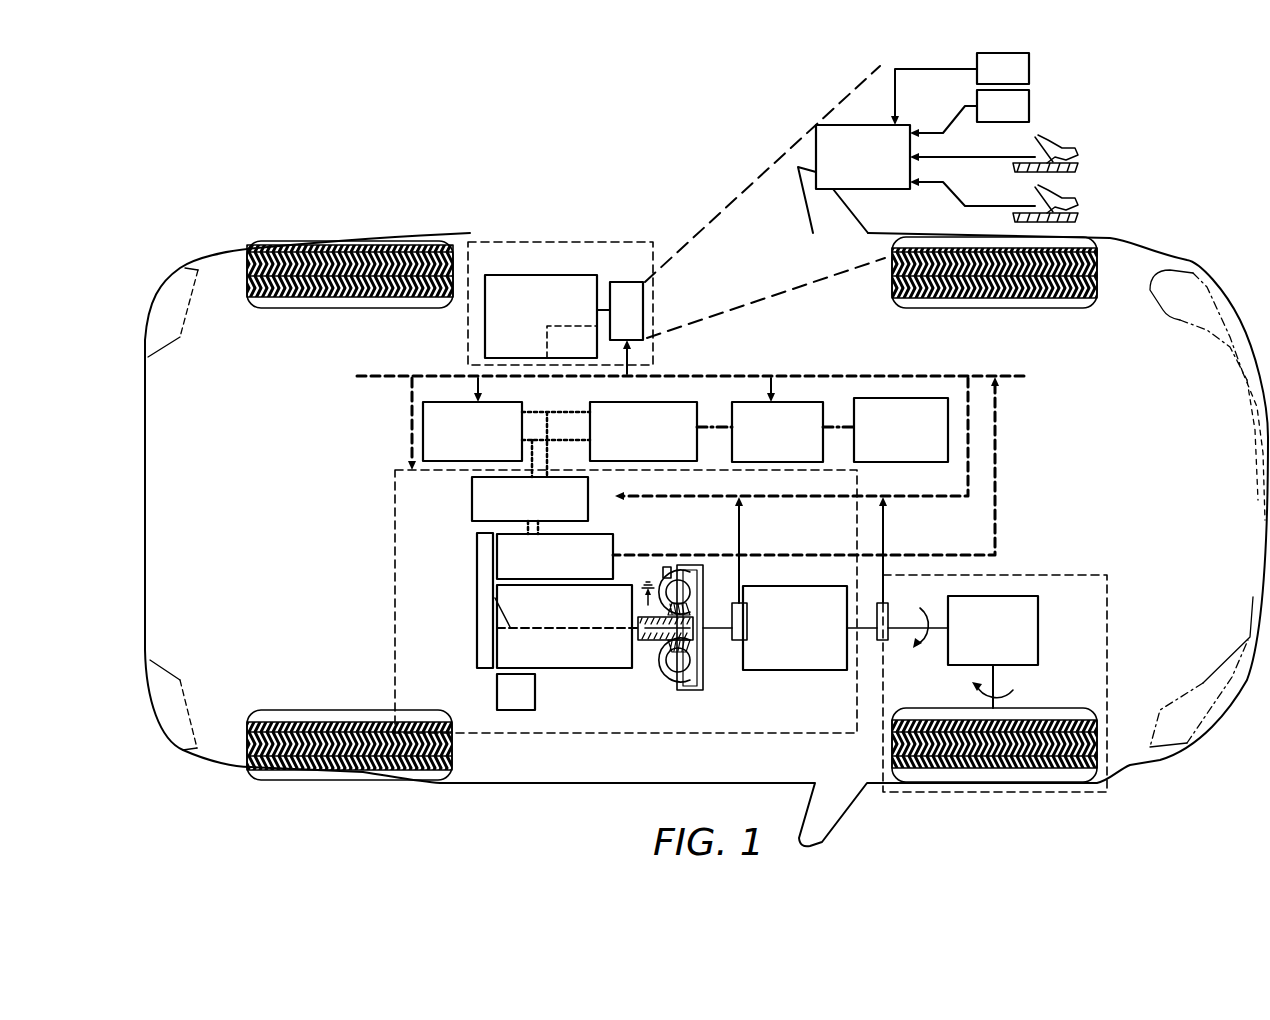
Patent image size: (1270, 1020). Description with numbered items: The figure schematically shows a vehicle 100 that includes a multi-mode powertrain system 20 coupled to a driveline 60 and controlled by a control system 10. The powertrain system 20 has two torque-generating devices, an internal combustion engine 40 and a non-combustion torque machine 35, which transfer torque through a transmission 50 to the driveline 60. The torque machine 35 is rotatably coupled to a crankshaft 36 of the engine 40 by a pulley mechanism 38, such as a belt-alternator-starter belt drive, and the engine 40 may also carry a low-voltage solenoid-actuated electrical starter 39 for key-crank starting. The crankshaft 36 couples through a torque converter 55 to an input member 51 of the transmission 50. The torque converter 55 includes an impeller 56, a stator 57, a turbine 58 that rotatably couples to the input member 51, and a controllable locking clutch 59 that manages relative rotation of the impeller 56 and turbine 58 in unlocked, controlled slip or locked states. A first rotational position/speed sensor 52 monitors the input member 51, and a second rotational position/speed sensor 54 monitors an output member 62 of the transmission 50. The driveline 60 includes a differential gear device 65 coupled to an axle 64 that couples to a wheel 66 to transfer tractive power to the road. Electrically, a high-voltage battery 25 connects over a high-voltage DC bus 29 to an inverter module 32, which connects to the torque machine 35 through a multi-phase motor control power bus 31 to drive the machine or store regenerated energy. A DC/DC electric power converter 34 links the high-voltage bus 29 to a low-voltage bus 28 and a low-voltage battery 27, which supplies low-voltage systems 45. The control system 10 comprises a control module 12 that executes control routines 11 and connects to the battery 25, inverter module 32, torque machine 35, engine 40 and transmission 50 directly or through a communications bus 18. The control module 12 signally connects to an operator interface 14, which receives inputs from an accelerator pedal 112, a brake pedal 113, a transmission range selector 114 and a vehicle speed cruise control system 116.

The vehicle 100 is at (1082, 351).
The control system 10 is at (498, 272).
The control routines 11 is at (562, 354).
The control module 12 is at (530, 302).
The operator interface 14 is at (852, 152).
The communications bus 18 is at (441, 365).
The multi-mode powertrain system 20 is at (866, 540).
The high-voltage battery 25 is at (461, 428).
The low-voltage battery 27 is at (767, 428).
The low-voltage bus 28 is at (723, 425).
The high-voltage DC bus 29 is at (573, 438).
The multi-phase motor control power bus 31 is at (547, 533).
The inverter module 32 is at (519, 503).
The DC/DC electric power converter 34 is at (633, 428).
The torque machine 35 is at (544, 560).
The crankshaft 36 is at (493, 597).
The pulley mechanism 38 is at (477, 603).
The low-voltage solenoid-actuated electrical starter 39 is at (497, 701).
The internal combustion engine 40 is at (554, 616).
The low-voltage systems 45 is at (890, 424).
The transmission 50 is at (784, 618).
The input member 51 is at (725, 642).
The first rotational position/speed sensor 52 is at (744, 612).
The second rotational position/speed sensor 54 is at (890, 614).
The torque converter 55 is at (648, 678).
The impeller 56 is at (694, 674).
The stator 57 is at (690, 672).
The turbine 58 is at (667, 678).
The controllable locking clutch 59 is at (664, 571).
The driveline 60 is at (1021, 568).
The output member 62 is at (869, 620).
The axle 64 is at (1013, 690).
The differential gear device 65 is at (982, 628).
The wheel 66 is at (955, 702).
The accelerator pedal 112 is at (1040, 204).
The brake pedal 113 is at (1040, 153).
The transmission range selector 114 is at (988, 117).
The vehicle speed cruise control system 116 is at (988, 80).